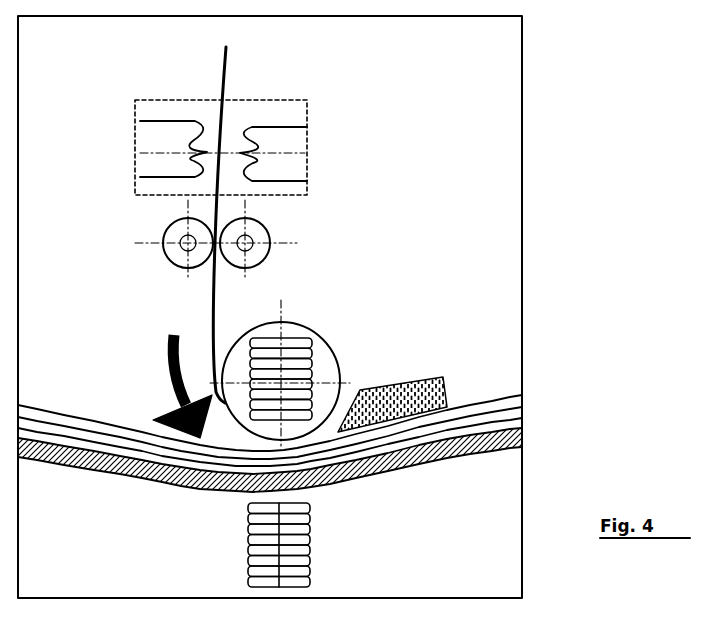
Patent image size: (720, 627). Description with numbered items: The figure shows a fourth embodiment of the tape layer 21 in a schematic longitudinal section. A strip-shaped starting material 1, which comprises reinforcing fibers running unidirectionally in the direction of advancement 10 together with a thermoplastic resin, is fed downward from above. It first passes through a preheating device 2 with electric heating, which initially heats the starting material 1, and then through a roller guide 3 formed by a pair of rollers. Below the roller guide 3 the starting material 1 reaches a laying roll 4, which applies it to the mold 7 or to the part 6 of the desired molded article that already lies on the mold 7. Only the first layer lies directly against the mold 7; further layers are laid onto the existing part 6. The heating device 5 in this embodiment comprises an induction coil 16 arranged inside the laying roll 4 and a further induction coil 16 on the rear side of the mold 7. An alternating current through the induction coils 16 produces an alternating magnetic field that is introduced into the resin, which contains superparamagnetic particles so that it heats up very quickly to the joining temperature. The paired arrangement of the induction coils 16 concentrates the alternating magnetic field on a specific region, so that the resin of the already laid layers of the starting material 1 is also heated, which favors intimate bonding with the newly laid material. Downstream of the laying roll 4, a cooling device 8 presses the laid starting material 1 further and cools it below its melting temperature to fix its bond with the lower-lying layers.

The starting material 1 is at (243, 49).
The preheating device 2 is at (294, 100).
The roller guide 3 is at (281, 237).
The laying roll 4 is at (323, 308).
The heating device 5 is at (310, 487).
The part 6 is at (135, 431).
The mold 7 is at (123, 465).
The cooling device 8 is at (419, 387).
The direction of advancement 10 is at (165, 343).
The induction coil 16 is at (247, 348).
The tape layer 21 is at (402, 133).